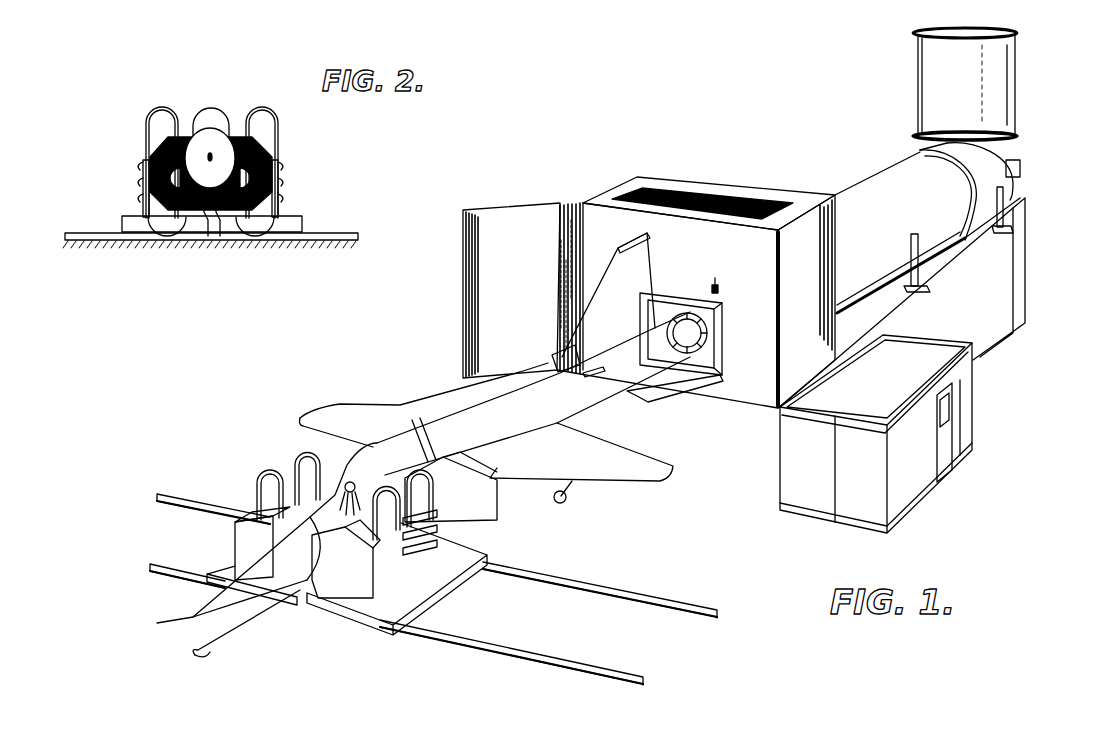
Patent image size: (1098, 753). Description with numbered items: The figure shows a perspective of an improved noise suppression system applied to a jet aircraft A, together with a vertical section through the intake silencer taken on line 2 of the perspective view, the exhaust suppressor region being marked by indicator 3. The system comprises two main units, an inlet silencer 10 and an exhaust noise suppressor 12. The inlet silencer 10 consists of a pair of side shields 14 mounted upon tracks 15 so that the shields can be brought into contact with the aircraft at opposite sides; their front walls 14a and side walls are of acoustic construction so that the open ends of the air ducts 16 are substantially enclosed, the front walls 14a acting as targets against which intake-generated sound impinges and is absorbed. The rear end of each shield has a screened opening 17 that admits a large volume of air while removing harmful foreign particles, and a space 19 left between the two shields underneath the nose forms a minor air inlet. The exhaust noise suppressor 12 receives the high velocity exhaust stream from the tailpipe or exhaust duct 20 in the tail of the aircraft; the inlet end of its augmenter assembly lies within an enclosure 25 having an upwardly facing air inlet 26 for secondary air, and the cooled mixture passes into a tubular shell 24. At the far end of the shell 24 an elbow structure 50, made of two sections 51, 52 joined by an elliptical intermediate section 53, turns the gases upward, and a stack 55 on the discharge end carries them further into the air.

In FIG. 1, the section line 2— 2 is at (322, 463).
In FIG. 1, the section indicator 3 is at (676, 338).
In FIG. 1, the inlet silencer 10 is at (490, 530).
In FIG. 1, the exhaust noise suppressor 12 is at (851, 176).
In FIG. 1, the side shields 14 is at (287, 467).
In FIG. 2, the side shields 14 is at (158, 139).
In FIG. 1, the front walls 14a is at (240, 538).
In FIG. 1, the tracks 15 is at (567, 590).
In FIG. 2, the tracks 15 is at (333, 234).
In FIG. 2, the air ducts 16 is at (143, 170).
In FIG. 2, the screened opening 17 is at (147, 213).
In FIG. 1, the space 19 is at (294, 607).
In FIG. 1, the tailpipe or exhaust duct 20 is at (687, 347).
In FIG. 1, the tubular shell 24 is at (924, 228).
In FIG. 1, the enclosure 25 is at (718, 190).
In FIG. 1, the air inlet 26 is at (660, 195).
In FIG. 1, the elbow structure 50 is at (984, 235).
In FIG. 1, the elbow section 51 is at (967, 185).
In FIG. 1, the elbow section 52 is at (1021, 166).
In FIG. 1, the intermediate section 53 is at (975, 126).
In FIG. 1, the stack 55 is at (965, 84).
In FIG. 1, the jet aircraft A is at (492, 393).
In FIG. 2, the jet aircraft A is at (221, 104).